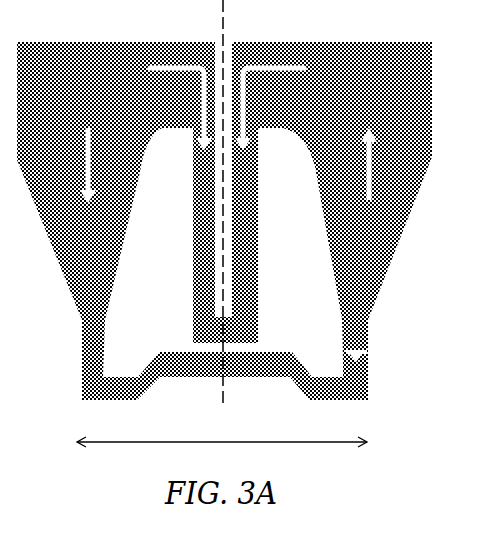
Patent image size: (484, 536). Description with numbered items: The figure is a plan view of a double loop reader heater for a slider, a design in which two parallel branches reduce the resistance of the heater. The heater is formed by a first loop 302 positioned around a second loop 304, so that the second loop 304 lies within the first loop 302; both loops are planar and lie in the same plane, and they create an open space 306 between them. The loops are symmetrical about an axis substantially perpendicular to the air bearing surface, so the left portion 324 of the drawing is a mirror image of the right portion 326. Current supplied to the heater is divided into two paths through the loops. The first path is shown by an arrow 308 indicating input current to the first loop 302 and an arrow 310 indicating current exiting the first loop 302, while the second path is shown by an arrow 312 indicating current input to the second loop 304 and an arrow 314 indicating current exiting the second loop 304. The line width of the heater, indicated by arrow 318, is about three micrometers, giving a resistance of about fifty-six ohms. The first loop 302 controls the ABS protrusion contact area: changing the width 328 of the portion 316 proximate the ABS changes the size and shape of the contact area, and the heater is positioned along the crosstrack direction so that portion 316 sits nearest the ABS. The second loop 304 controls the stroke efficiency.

The first loop 302 is at (83, 357).
The second loop 304 is at (193, 267).
The open space 306 is at (300, 252).
The arrow showing input current to the first loop 308 is at (86, 130).
The arrow showing current exiting the first loop 310 is at (367, 135).
The arrow showing current input to the second loop 312 is at (165, 105).
The arrow showing current exiting the second loop 314 is at (288, 105).
The portion proximate the ABS 316 is at (215, 378).
The line width 318 is at (353, 358).
The left portion 324 is at (125, 42).
The right portion 326 is at (355, 42).
The width 328 is at (125, 444).